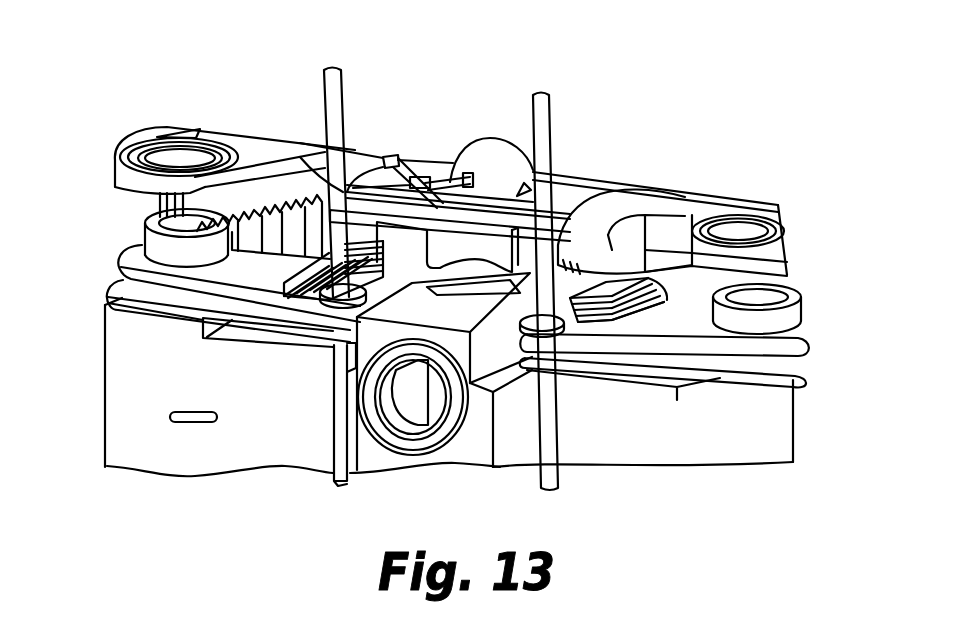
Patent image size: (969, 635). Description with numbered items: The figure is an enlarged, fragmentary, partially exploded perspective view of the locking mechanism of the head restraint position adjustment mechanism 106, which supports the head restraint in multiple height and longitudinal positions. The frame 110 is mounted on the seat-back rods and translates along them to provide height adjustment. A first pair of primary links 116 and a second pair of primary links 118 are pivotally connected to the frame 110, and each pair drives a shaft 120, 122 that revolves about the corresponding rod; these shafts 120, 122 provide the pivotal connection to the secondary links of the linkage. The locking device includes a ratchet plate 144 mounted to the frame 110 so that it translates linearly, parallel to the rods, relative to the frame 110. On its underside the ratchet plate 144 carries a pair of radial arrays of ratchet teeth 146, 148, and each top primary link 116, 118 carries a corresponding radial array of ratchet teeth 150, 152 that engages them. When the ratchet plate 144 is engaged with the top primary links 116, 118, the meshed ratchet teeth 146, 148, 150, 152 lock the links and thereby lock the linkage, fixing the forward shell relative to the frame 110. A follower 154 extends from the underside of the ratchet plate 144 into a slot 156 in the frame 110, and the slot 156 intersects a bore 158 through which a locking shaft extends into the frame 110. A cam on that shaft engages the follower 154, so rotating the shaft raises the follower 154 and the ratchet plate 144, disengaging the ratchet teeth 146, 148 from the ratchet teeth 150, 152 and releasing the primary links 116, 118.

The head restraint position adjustment mechanism 106 is at (506, 95).
The frame 110 is at (667, 443).
The first pair of primary links 116 is at (133, 252).
The second pair of primary links 118 is at (770, 367).
The shaft 120 is at (320, 110).
The shaft 122 is at (548, 137).
The ratchet plate 144 is at (388, 153).
The radial array of ratchet teeth 146 is at (290, 232).
The radial array of ratchet teeth 148 is at (678, 213).
The radial array of ratchet teeth 150 is at (337, 272).
The radial array of ratchet teeth 152 is at (677, 293).
The follower 154 is at (576, 174).
The slot 156 is at (432, 273).
The bore 158 is at (419, 402).